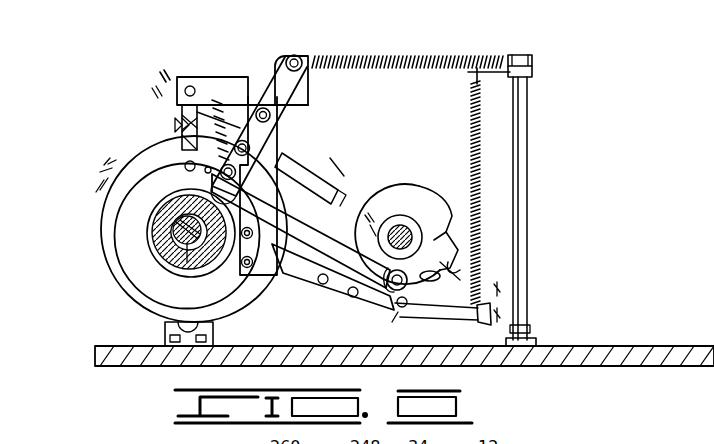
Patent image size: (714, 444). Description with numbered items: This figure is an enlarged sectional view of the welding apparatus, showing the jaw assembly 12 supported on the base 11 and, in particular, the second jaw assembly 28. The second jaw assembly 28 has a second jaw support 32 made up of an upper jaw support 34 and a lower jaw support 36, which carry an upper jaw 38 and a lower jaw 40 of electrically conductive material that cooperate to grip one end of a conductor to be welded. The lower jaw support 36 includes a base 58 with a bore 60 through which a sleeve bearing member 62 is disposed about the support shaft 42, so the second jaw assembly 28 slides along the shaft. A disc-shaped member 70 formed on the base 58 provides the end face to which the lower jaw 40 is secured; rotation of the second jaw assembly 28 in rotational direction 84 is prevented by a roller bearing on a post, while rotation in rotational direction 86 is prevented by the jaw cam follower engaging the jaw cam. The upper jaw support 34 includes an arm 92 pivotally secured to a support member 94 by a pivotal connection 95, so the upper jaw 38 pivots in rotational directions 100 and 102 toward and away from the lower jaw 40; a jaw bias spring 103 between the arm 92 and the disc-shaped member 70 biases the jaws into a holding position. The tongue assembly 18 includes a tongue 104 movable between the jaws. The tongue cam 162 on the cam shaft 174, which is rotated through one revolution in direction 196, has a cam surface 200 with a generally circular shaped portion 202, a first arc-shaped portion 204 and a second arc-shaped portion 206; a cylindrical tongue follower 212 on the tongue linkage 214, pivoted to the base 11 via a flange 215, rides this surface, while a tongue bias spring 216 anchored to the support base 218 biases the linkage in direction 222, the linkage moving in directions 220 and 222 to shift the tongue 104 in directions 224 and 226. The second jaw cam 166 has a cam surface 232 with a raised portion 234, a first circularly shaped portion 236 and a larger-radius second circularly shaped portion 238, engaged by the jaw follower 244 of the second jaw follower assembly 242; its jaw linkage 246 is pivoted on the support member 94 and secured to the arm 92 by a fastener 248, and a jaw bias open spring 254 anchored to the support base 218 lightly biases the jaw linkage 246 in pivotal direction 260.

The base 11 is at (567, 358).
The jaw assembly 12 is at (183, 72).
The tongue assembly 18 is at (318, 160).
The second jaw assembly 28 is at (176, 115).
The second jaw support 32 is at (100, 214).
The upper jaw support 34 is at (245, 74).
The lower jaw support 36 is at (136, 154).
The upper jaw 38 is at (190, 112).
The lower jaw 40 is at (206, 135).
The support shaft 42 is at (195, 250).
The base 58 is at (148, 225).
The bore 60 is at (170, 252).
The sleeve bearing member 62 is at (185, 270).
The disc-shaped member 70 is at (112, 260).
The rotational direction 84 is at (108, 177).
The rotational direction 86 is at (104, 165).
The arm 92 is at (255, 84).
The support member 94 is at (270, 144).
The pivotal connection 95 is at (277, 70).
The rotational direction 100 is at (168, 76).
The rotational direction 102 is at (152, 90).
The jaw bias spring 103 is at (270, 122).
The tongue 104 is at (180, 125).
The tongue cam 162 is at (362, 190).
The second jaw cam 166 is at (388, 220).
The cam shaft 174 is at (401, 225).
The direction 196 is at (368, 215).
The cam surface 200 is at (452, 249).
The generally circular shaped portion 202 is at (458, 244).
The first arc-shaped portion 204 is at (326, 285).
The second arc-shaped portion 206 is at (442, 273).
The tongue follower 212 is at (410, 310).
The tongue linkage 214 is at (388, 318).
The flange 215 is at (166, 333).
The tongue bias spring 216 is at (482, 168).
The support base 218 is at (522, 118).
The direction 220 is at (500, 290).
The direction 222 is at (500, 314).
The direction 224 is at (330, 198).
The direction 226 is at (346, 158).
The cam surface 232 is at (428, 206).
The raised portion 234 is at (410, 282).
The first circularly shaped portion 236 is at (374, 235).
The second circularly shaped portion 238 is at (452, 222).
The second jaw follower assembly 242 is at (308, 296).
The jaw follower 244 is at (478, 314).
The jaw linkage 246 is at (290, 272).
The fastener 248 is at (301, 56).
The jaw bias open spring 254 is at (460, 68).
The pivotal direction 260 is at (340, 76).